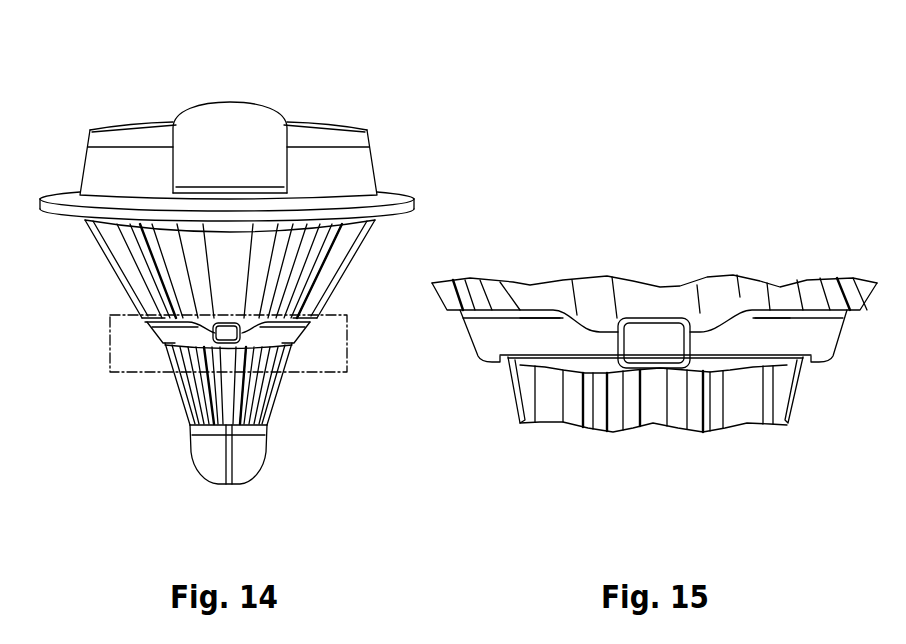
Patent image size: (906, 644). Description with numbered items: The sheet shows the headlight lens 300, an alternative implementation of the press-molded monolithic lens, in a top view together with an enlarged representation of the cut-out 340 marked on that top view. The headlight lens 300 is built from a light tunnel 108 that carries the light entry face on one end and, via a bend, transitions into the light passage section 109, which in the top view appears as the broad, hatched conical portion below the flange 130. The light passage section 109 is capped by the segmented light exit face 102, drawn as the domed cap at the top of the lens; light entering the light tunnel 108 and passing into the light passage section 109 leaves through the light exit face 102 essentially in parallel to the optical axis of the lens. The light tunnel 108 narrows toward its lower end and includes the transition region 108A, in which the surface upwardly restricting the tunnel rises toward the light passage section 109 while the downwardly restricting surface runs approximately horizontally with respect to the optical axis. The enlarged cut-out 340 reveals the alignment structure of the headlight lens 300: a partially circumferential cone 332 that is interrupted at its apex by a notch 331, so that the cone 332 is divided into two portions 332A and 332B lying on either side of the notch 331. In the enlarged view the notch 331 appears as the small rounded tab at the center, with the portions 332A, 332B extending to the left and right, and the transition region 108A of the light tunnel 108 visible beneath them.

In FIG. 14, the light exit face 102 is at (258, 84).
In FIG. 14, the flange 130 is at (400, 206).
In FIG. 14, the light passage section 109 is at (122, 253).
In FIG. 14, the headlight lens 300 is at (310, 412).
In FIG. 14, the light tunnel 108 is at (207, 447).
In FIG. 14, the cut-out 340 is at (131, 375).
In FIG. 15, the partially circumferential cone 332 is at (488, 334).
In FIG. 15, the portion of cone 332A is at (527, 332).
In FIG. 15, the portion of cone 332B is at (750, 330).
In FIG. 15, the notch 331 is at (653, 340).
In FIG. 15, the transition region 108A is at (565, 393).